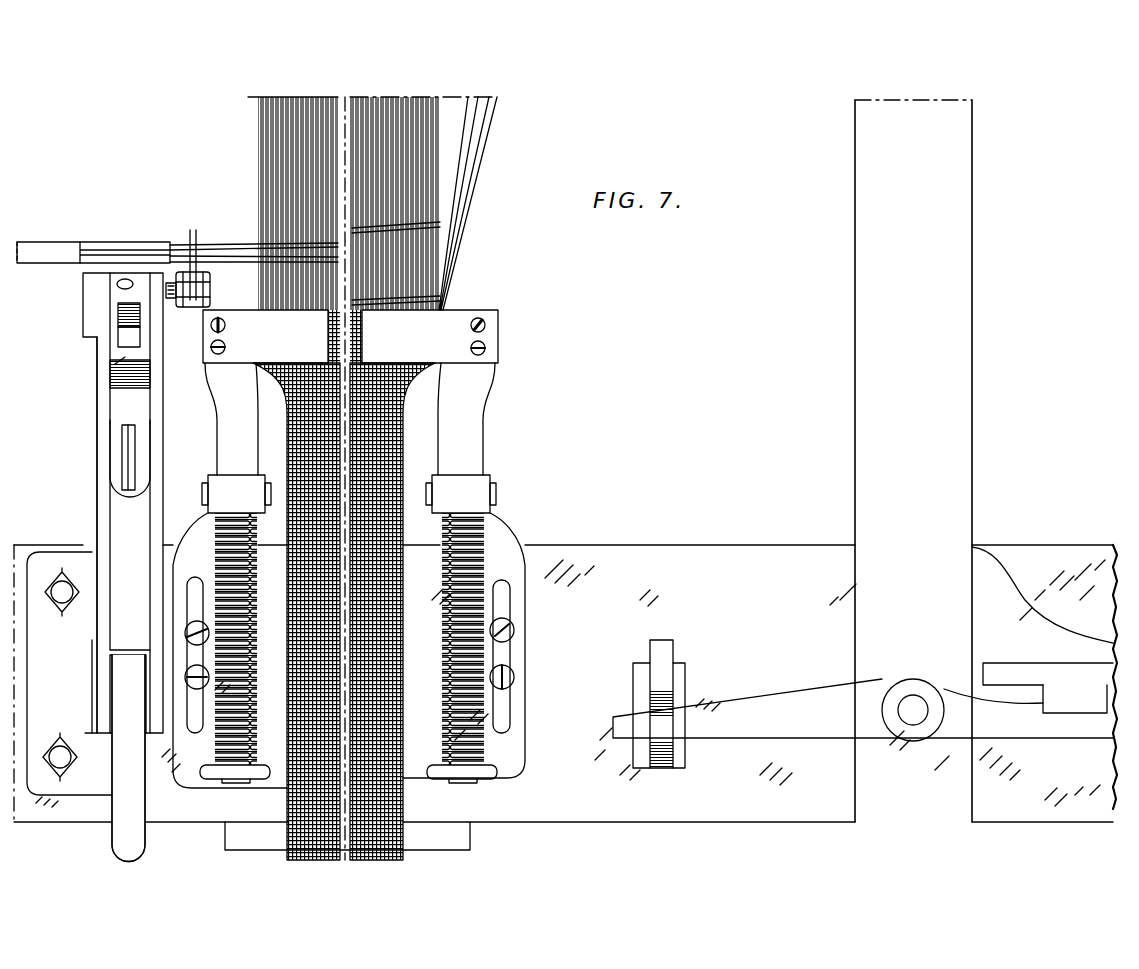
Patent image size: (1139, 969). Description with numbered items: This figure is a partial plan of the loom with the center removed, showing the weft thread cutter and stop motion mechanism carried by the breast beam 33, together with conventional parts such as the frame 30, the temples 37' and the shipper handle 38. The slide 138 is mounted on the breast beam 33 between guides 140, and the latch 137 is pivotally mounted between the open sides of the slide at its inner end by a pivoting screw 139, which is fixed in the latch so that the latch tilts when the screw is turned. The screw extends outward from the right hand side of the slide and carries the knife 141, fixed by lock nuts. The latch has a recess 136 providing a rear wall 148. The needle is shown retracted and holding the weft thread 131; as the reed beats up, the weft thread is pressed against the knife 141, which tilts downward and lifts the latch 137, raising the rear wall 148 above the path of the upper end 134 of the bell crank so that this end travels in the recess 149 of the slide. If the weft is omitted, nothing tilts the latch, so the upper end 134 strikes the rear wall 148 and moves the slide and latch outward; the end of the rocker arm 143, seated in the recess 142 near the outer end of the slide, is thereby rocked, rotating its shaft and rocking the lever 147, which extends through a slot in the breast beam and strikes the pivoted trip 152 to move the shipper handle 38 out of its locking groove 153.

The frame 30 is at (963, 323).
The breast beam 33 is at (565, 697).
The temples 37' is at (362, 658).
The shipper handle 38 is at (1006, 672).
The weft thread 131 is at (228, 243).
The upper end of the bell crank 134 is at (126, 437).
The recess 136 is at (125, 323).
The latch 137 is at (104, 288).
The slide 138 is at (117, 525).
The pivoting screw 139 is at (170, 307).
The guides 140 is at (92, 645).
The knife 141 is at (193, 262).
The recess 142 is at (112, 655).
The rocker arm 143 is at (125, 838).
The lever 147 is at (668, 657).
The rear wall 148 is at (118, 368).
The recess 149 is at (118, 455).
The pivoted trip 152 is at (863, 710).
The locking groove 153 is at (1070, 713).